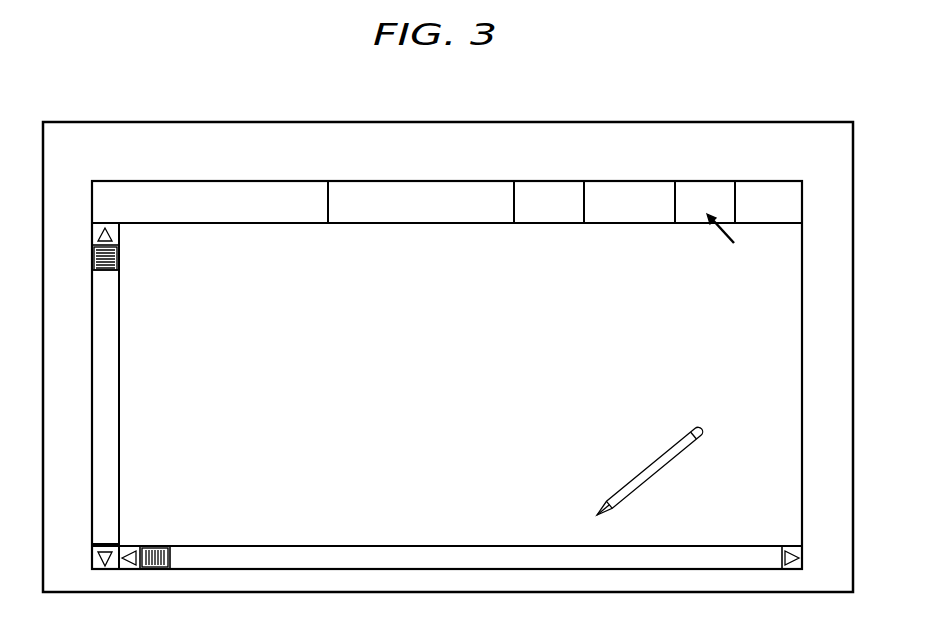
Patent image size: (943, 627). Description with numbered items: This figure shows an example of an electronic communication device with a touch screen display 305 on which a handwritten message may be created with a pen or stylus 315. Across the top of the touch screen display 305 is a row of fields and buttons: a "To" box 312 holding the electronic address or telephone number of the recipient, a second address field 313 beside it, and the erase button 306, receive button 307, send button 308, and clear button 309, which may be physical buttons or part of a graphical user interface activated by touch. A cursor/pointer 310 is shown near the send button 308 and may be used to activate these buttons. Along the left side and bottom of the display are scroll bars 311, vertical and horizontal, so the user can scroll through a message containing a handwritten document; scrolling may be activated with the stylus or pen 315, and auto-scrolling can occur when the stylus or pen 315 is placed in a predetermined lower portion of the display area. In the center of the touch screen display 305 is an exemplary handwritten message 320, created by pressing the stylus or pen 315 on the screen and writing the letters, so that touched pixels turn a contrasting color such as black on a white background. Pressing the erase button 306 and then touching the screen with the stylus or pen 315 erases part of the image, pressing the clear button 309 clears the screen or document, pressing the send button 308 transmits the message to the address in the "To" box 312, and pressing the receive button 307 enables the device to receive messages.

The touch screen display 305 is at (453, 120).
The erase button 306 is at (557, 181).
The receive button 307 is at (635, 181).
The send button 308 is at (710, 181).
The clear button 309 is at (775, 181).
The cursor/pointer 310 is at (718, 236).
The scroll bar 311 is at (98, 429).
The To box 312 is at (213, 181).
The from address field 313 is at (427, 181).
The stylus or pen 315 is at (654, 463).
The handwritten message 320 is at (502, 314).